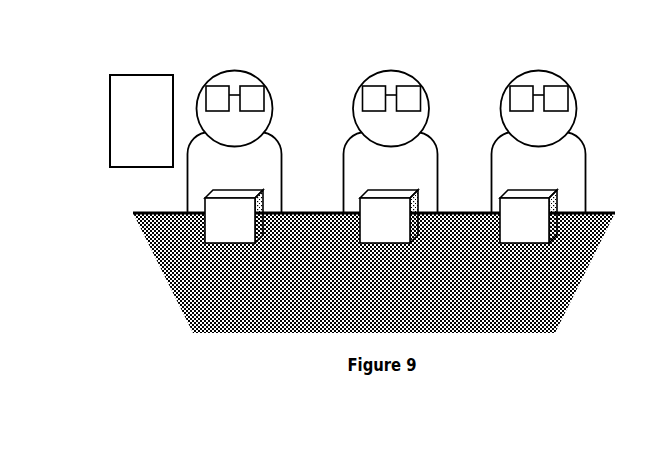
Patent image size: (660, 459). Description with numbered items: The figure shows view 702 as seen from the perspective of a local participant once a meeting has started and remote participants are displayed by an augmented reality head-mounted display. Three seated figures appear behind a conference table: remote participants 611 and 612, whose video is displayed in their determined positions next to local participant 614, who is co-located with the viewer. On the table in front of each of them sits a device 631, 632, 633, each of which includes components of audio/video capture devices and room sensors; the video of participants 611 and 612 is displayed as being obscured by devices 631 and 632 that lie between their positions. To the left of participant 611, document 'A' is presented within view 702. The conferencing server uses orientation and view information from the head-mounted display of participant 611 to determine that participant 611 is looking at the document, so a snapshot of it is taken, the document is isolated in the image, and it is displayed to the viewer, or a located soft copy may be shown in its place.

The view 702 is at (88, 90).
The participant 611 is at (235, 142).
The participant 612 is at (391, 142).
The participant 614 is at (539, 142).
The device 631 is at (234, 216).
The device 632 is at (389, 216).
The device 633 is at (528, 216).